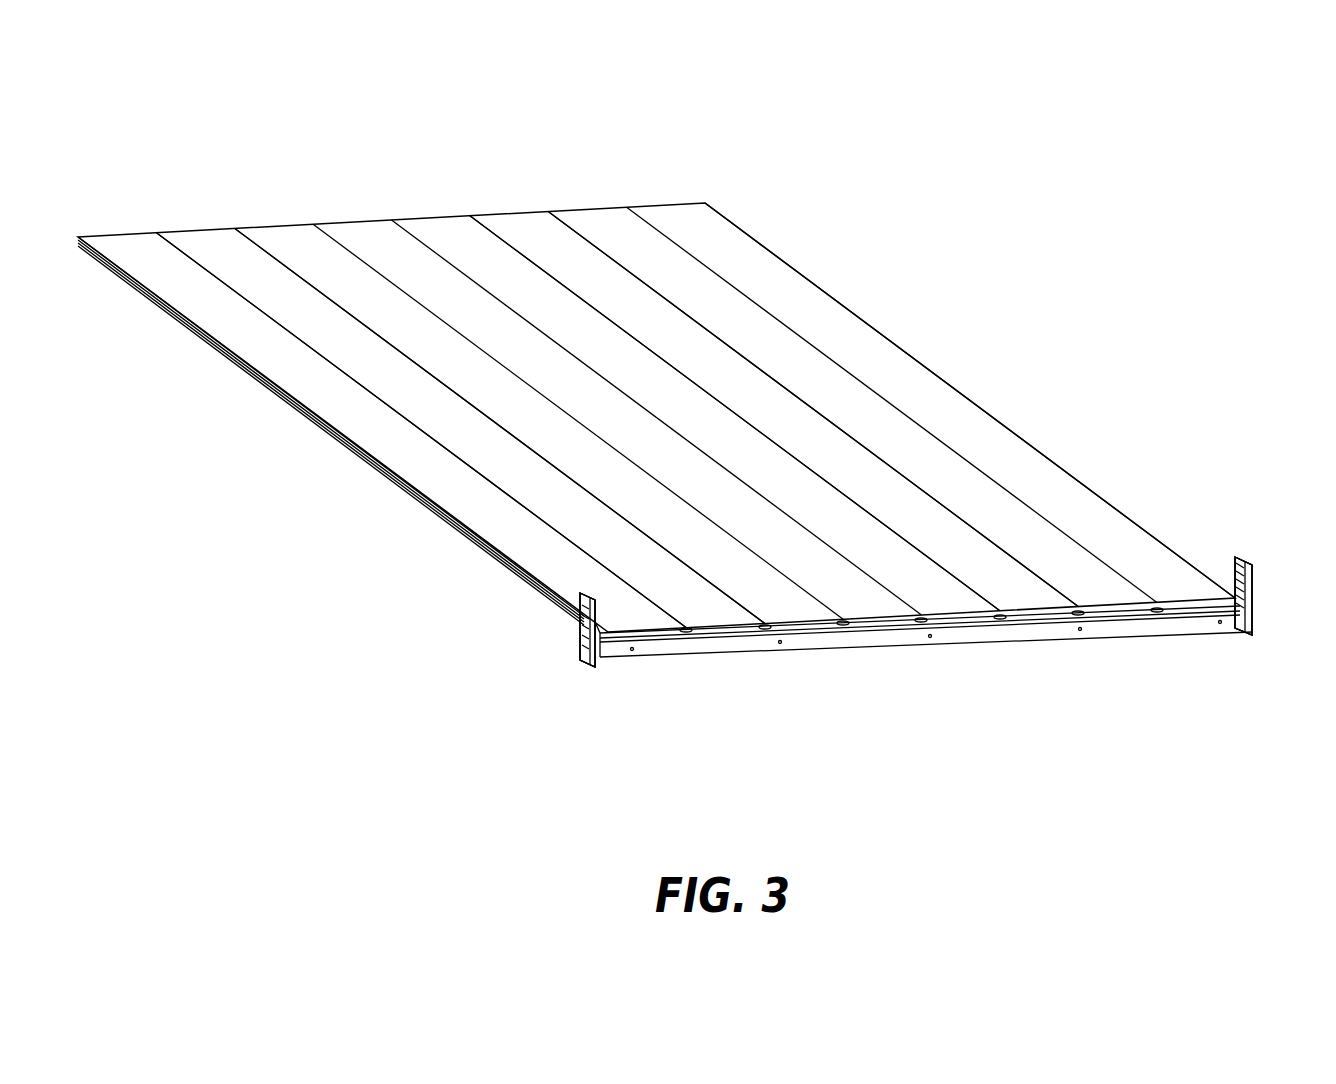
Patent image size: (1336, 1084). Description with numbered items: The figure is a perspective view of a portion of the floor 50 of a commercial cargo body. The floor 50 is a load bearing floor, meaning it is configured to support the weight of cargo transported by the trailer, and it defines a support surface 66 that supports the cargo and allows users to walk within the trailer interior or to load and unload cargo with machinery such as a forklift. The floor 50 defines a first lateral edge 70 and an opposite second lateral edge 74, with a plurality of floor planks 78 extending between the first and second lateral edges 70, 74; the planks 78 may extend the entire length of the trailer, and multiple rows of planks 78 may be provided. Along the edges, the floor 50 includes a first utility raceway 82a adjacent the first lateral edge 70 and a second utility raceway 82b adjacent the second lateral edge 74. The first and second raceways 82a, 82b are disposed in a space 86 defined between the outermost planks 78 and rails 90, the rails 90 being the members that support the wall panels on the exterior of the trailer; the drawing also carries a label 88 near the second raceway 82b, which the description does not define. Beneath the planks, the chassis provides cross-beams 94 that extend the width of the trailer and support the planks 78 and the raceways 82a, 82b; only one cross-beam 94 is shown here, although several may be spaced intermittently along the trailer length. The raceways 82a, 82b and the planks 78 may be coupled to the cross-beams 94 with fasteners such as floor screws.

The floor 50 is at (868, 126).
The support surface 66 is at (782, 348).
The first lateral edge 70 is at (224, 402).
The second lateral edge 74 is at (952, 352).
The floor planks 78 is at (337, 237).
The first utility raceway 82a is at (603, 648).
The second utility raceway 82b is at (1233, 594).
The space 86 is at (608, 611).
The second end 88 is at (1208, 560).
The rails 90 is at (585, 612).
The cross-beams 94 is at (866, 641).